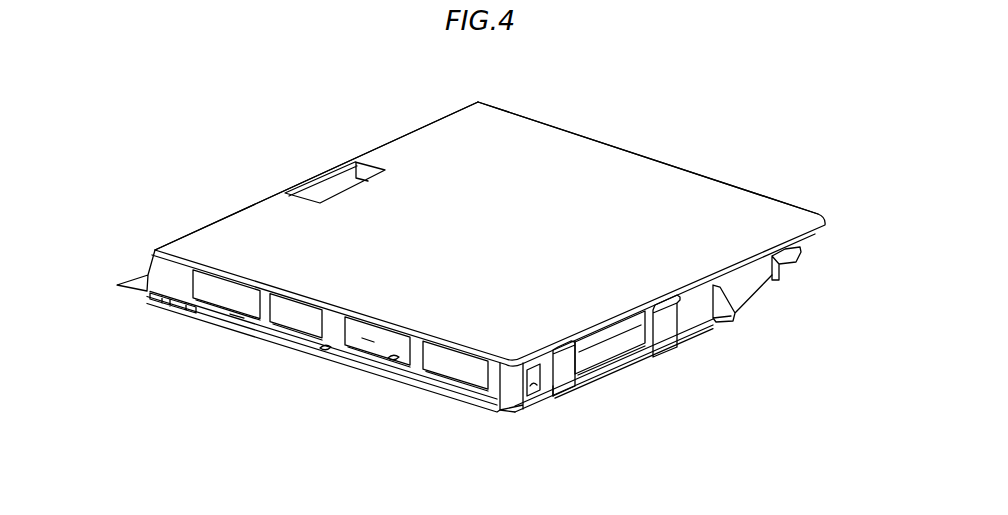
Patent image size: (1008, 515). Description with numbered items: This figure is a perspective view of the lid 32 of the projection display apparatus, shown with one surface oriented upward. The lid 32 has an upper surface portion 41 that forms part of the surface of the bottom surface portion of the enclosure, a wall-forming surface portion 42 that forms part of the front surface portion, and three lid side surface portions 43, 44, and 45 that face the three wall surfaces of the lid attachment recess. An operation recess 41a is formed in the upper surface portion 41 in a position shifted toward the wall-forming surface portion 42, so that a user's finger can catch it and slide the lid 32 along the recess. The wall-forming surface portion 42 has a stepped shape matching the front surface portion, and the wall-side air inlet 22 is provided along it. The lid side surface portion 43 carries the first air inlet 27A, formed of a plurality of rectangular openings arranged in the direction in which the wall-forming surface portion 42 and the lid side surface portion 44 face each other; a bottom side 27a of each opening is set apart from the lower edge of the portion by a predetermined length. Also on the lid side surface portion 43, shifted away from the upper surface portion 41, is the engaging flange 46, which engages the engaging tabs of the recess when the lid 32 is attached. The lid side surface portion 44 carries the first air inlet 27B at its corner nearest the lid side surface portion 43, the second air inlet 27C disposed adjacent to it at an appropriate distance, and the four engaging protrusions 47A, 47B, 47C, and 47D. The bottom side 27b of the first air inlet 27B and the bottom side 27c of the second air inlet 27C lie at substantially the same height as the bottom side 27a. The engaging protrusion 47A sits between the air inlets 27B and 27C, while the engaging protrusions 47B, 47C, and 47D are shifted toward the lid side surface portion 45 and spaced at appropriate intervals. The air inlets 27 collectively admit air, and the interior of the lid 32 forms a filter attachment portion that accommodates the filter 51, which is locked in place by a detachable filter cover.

The lid 32 is at (585, 99).
The upper surface portion 41 is at (740, 197).
The operation recess 41a is at (330, 178).
The wall-forming surface portion 42 is at (225, 213).
The lid side surface portion 43 is at (181, 292).
The lid side surface portion 44 is at (693, 331).
The lid side surface portion 45 is at (692, 169).
The engaging flange 46 is at (318, 350).
The wall-side air inlet 22 is at (136, 272).
The filter 51 is at (453, 370).
The engagement portion 27 is at (368, 342).
The first air inlet 27A is at (237, 317).
The first air inlet 27B is at (551, 388).
The second air inlet 27C is at (636, 357).
The bottom side 27a is at (392, 360).
The bottom side 27b is at (537, 392).
The bottom side 27c is at (628, 349).
The engaging protrusion 47A is at (569, 350).
The engaging protrusion 47B is at (668, 304).
The engaging protrusion 47C is at (729, 320).
The engaging protrusion 47D is at (798, 258).